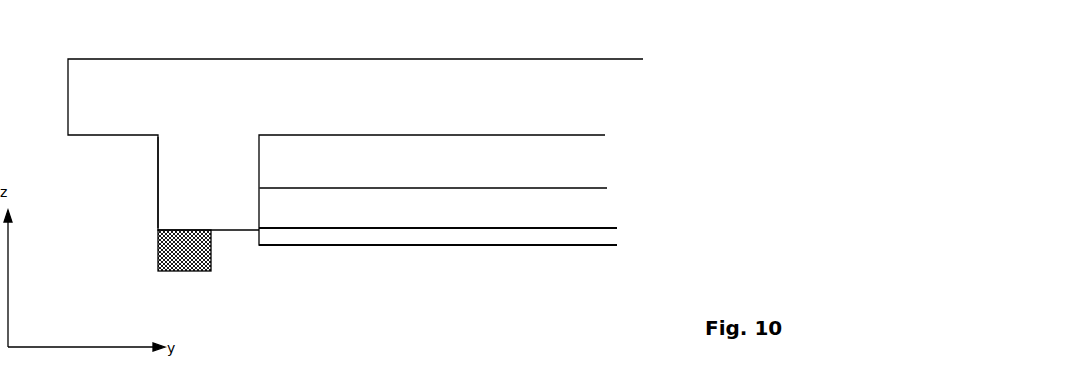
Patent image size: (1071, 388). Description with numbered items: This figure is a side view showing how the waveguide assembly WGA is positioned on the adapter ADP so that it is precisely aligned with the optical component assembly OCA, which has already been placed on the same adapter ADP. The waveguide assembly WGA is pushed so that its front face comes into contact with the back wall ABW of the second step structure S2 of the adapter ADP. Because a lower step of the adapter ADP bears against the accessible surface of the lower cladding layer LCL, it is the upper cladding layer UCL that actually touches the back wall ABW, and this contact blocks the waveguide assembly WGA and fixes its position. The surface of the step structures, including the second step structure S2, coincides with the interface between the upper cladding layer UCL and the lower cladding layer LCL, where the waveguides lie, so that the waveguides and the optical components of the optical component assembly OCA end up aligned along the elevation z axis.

The adapter ADP is at (565, 79).
The second step structure S2 is at (175, 175).
The optical component assembly OCA is at (156, 263).
The back wall ABW is at (258, 157).
The upper cladding layer UCL is at (600, 200).
The lower cladding layer LCL is at (602, 239).
The waveguide assembly WGA is at (452, 245).